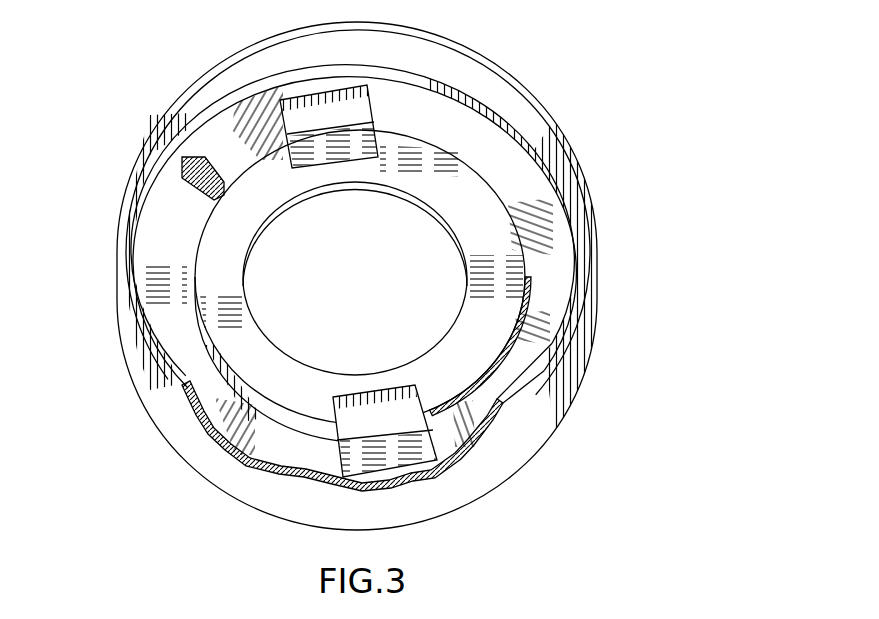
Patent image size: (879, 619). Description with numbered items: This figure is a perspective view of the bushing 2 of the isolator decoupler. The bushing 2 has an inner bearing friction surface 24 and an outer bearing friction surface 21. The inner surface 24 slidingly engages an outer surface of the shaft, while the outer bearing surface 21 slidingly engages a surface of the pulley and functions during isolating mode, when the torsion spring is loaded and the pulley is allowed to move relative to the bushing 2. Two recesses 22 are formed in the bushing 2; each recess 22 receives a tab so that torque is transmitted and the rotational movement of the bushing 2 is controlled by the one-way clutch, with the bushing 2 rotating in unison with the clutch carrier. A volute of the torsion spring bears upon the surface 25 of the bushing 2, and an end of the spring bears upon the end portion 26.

The bushing 2 is at (480, 50).
The outer bearing friction surface 21 is at (125, 285).
The recess 22 is at (310, 108).
The inner bearing friction surface 24 is at (415, 205).
The surface 25 is at (184, 200).
The end portion 26 is at (208, 172).